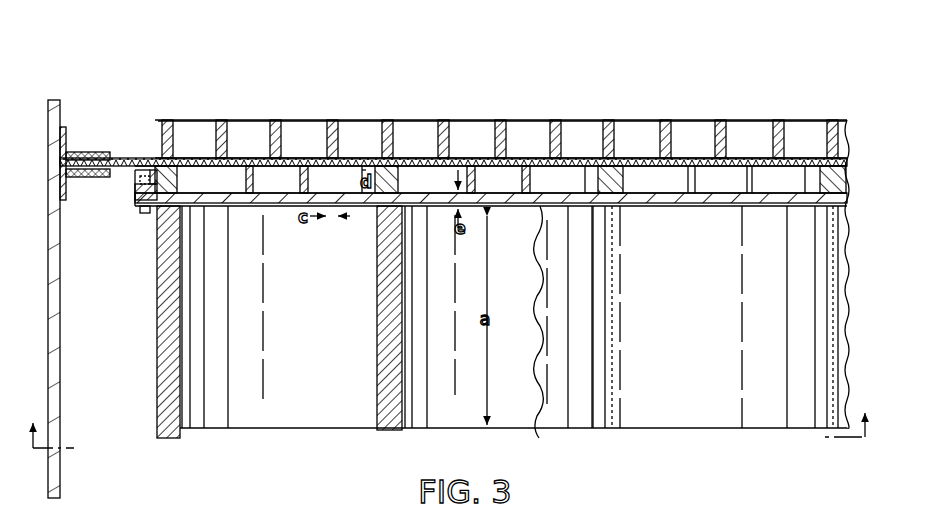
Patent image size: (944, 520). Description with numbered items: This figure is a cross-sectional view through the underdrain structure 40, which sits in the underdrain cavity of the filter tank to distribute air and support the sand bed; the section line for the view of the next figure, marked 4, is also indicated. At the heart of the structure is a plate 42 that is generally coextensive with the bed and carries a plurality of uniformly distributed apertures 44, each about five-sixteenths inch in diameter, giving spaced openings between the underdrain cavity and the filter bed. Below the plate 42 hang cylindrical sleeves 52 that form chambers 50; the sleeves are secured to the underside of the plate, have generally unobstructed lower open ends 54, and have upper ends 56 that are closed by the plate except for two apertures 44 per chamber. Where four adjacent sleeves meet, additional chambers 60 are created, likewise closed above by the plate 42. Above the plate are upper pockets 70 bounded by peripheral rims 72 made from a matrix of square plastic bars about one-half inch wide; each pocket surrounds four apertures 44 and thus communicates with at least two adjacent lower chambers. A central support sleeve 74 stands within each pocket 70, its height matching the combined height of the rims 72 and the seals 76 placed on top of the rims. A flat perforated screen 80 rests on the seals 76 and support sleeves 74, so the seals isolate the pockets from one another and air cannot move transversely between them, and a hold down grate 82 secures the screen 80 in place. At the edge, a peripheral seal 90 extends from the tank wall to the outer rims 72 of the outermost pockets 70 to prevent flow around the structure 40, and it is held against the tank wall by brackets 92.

The underdrain structure 40 is at (718, 85).
The plate 42 is at (762, 190).
The apertures 44 is at (238, 245).
The chambers 50 is at (285, 432).
The sleeves 52 is at (183, 320).
The lower open ends 54 is at (220, 430).
The upper ends 56 is at (190, 215).
The additional chambers 60 is at (630, 390).
The upper pockets 70 is at (228, 140).
The peripheral rims 72 is at (178, 182).
The central support sleeve 74 is at (280, 207).
The seal 76 is at (160, 160).
The screen 80 is at (430, 122).
The hold down grate 82 is at (295, 140).
The peripheral seal 90 is at (125, 172).
The brackets 92 is at (85, 152).
The section line 4- 4 is at (455, 414).